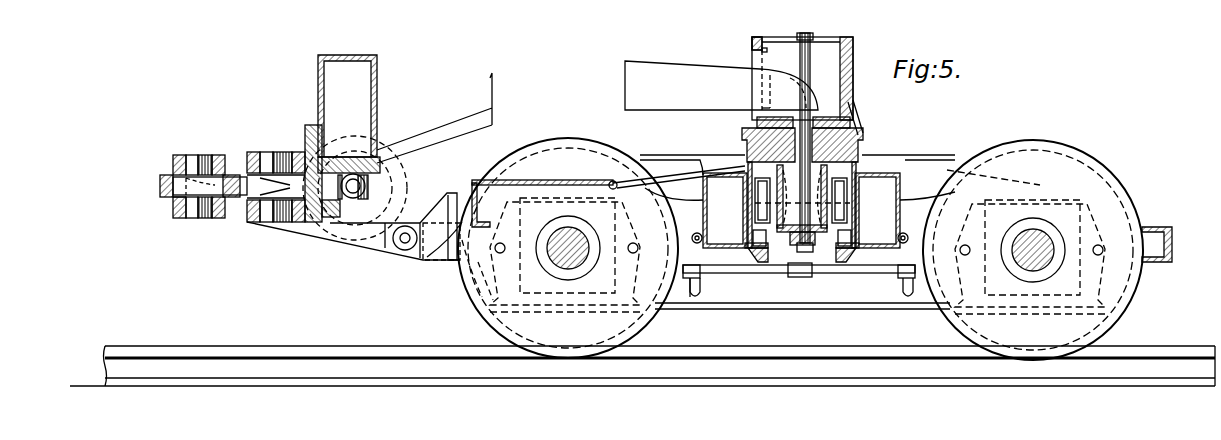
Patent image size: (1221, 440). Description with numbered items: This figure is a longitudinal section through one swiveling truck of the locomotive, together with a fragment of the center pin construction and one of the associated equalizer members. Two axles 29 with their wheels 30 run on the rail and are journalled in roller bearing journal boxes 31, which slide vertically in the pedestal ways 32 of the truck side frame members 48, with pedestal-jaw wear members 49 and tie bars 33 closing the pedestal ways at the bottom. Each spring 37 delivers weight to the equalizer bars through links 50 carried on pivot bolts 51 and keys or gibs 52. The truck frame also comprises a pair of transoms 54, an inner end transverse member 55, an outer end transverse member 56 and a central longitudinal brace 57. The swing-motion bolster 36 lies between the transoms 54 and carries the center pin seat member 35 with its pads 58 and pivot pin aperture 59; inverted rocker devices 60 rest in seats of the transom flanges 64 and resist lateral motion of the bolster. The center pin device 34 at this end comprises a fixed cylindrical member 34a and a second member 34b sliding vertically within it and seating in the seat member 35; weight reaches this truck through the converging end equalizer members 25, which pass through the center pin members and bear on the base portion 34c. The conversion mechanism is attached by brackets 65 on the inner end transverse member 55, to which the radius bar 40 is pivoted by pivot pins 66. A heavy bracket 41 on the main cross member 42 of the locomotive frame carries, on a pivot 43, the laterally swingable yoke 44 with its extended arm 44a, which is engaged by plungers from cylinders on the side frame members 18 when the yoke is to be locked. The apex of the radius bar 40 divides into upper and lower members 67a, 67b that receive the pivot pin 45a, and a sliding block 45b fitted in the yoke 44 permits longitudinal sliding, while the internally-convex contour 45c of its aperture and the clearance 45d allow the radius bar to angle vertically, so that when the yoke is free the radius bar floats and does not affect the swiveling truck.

The side frame member 18 is at (465, 120).
The end equalizer member 25 is at (721, 85).
The axle 29 is at (576, 255).
The wheel 30 is at (483, 320).
The roller bearing journal box 31 is at (560, 300).
The pedestal way 32 is at (478, 284).
The bar 33 is at (895, 309).
The center pin device 34 is at (755, 42).
The fixed cylindrical member 34a is at (752, 41).
The second member 34b is at (764, 50).
The base portion 34c is at (770, 108).
The center pin seat member 35 is at (866, 133).
The swing-motion bolster 36 is at (857, 170).
The spring 37 is at (745, 273).
The radius bar 40 is at (346, 236).
The bracket 41 is at (308, 140).
The main cross member 42 is at (377, 70).
The pivot 43 is at (268, 222).
The yoke 44 is at (162, 183).
The yoke arm 44a is at (362, 197).
The pivot pin 45a is at (207, 155).
The sliding block 45b is at (178, 186).
The internally-convex contour 45c is at (195, 218).
The clearance 45d is at (176, 198).
The side frame member 48 is at (648, 155).
The pedestal-jaw wear member 49 is at (510, 216).
The link 50 is at (700, 296).
The pivot bolt 51 is at (710, 244).
The key or gib 52 is at (691, 297).
The transom 54 is at (730, 173).
The inner end transverse member 55 is at (469, 190).
The outer end transverse member 56 is at (1175, 240).
The central longitudinal brace 57 is at (540, 180).
The pad 58 is at (858, 125).
The pivot pin aperture 59 is at (805, 115).
The inverted rocker device 60 is at (753, 238).
The flange 64 is at (848, 262).
The bracket 65 is at (431, 210).
The pivot pin 66 is at (404, 248).
The upper yoke member 67a is at (180, 155).
The lower yoke member 67b is at (175, 212).